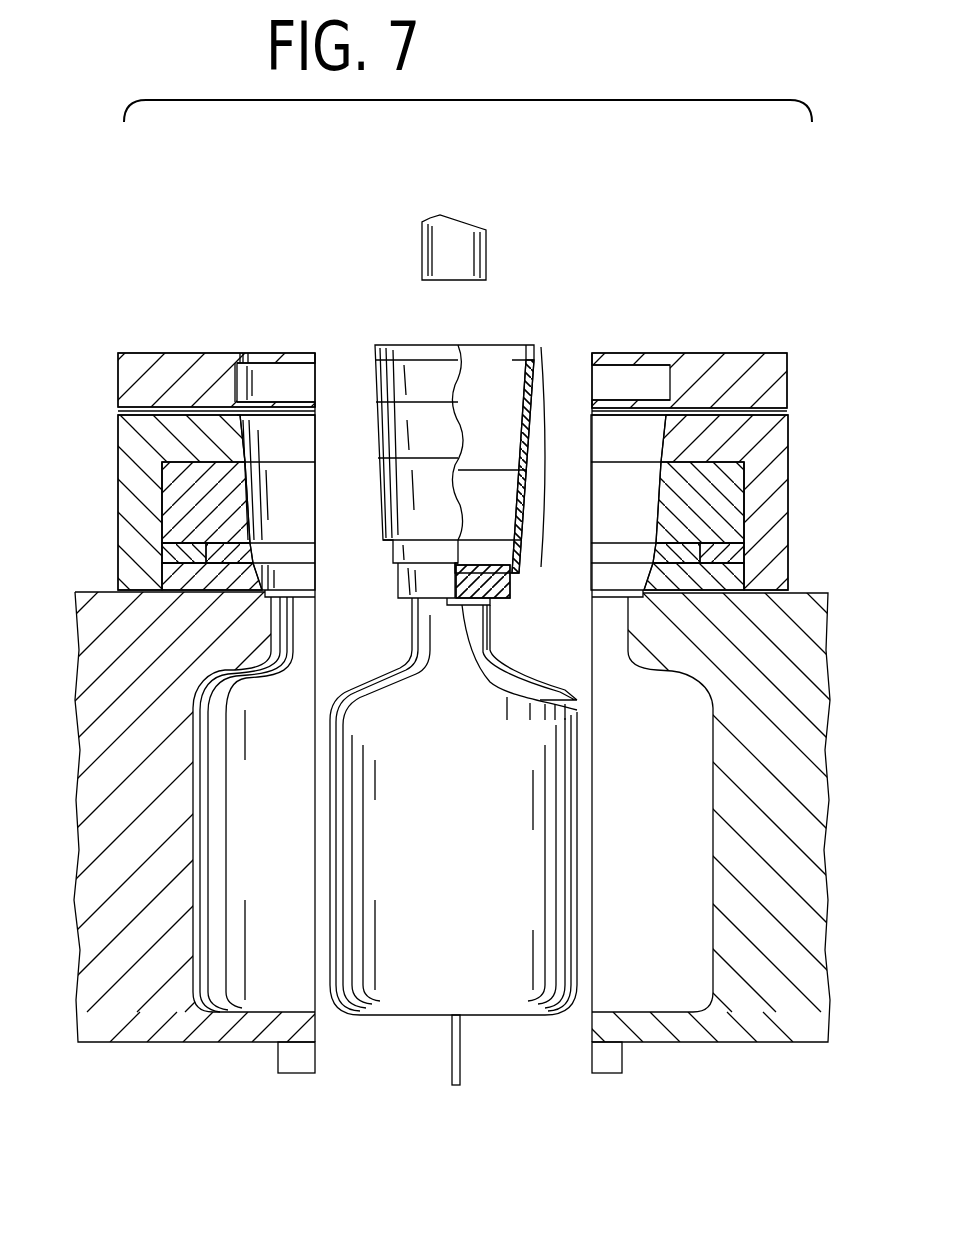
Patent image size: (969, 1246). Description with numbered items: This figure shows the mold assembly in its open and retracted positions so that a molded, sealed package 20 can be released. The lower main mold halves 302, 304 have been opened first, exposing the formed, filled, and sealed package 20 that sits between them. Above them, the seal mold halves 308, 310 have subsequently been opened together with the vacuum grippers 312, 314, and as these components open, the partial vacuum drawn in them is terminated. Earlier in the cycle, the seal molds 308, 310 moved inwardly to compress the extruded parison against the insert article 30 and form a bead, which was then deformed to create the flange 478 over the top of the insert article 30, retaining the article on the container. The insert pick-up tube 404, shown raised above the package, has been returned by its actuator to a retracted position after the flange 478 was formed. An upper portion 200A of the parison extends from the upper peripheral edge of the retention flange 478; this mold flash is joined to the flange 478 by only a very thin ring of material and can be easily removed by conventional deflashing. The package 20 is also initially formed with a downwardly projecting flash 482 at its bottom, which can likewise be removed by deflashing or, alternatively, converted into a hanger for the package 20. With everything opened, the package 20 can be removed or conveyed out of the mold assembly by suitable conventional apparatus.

The package 20 is at (385, 1043).
The insert article 30 is at (464, 606).
The upper portion of the parison 200A is at (548, 465).
The main mold half 302 is at (105, 977).
The main mold half 304 is at (790, 968).
The seal mold 308 is at (95, 415).
The seal mold 310 is at (803, 415).
The vacuum gripper 312 is at (146, 383).
The vacuum gripper 314 is at (772, 383).
The insert pick-up tube 404 is at (475, 260).
The flange 478 is at (490, 560).
The downwardly projecting flash 482 is at (452, 1058).